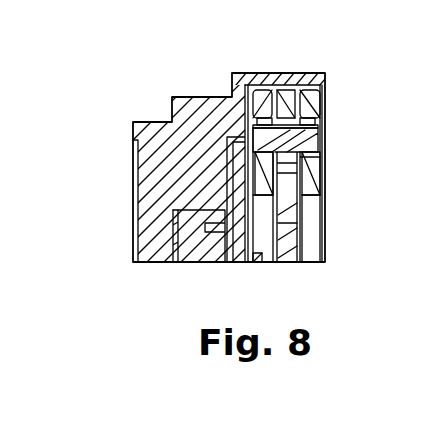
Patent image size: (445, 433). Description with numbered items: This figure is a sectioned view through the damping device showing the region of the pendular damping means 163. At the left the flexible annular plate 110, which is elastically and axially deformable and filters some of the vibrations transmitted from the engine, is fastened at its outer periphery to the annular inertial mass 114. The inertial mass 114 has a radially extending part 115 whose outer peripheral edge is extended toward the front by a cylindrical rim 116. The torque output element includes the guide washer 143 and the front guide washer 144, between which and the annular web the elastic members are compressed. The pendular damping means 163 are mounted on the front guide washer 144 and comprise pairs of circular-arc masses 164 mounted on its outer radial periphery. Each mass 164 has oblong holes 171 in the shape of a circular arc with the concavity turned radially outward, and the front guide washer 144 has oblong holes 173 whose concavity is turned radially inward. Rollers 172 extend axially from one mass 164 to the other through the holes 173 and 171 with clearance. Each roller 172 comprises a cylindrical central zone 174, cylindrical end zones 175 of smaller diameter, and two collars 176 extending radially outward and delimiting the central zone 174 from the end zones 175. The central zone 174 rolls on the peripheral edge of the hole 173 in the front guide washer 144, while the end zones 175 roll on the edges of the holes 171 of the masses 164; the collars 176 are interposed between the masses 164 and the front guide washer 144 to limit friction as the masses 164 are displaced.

The flexible annular plate 110 is at (177, 262).
The annular inertial mass 114 is at (152, 132).
The radially extending part 115 is at (155, 232).
The cylindrical rim 116 is at (286, 78).
The guide washer 143 is at (245, 176).
The front guide washer 144 is at (292, 262).
The pendular damping means 163 is at (333, 177).
The mass 164 is at (287, 177).
The oblong hole 171 is at (314, 78).
The roller 172 is at (330, 140).
The oblong hole 173 is at (293, 220).
The cylindrical central zone 174 is at (320, 132).
The cylindrical end zone 175 is at (248, 132).
The collar 176 is at (263, 78).